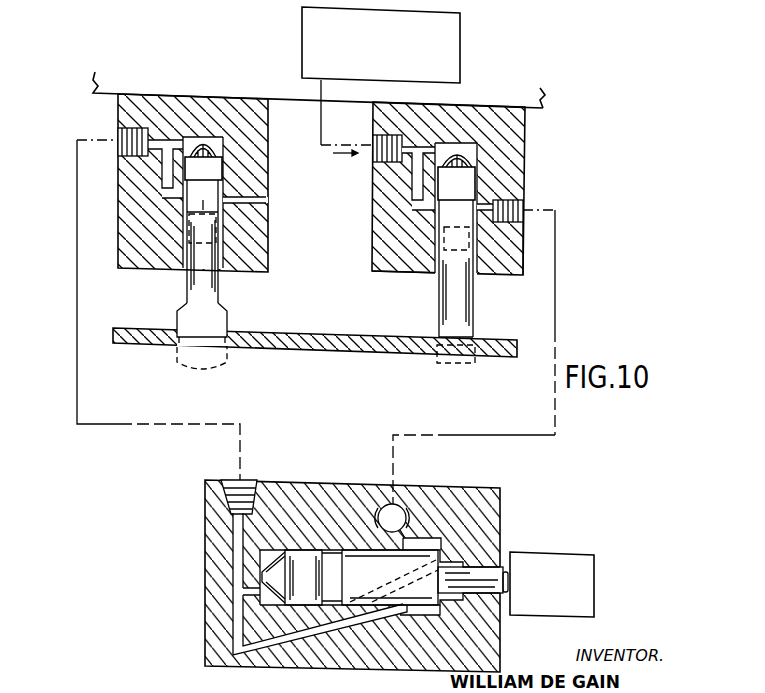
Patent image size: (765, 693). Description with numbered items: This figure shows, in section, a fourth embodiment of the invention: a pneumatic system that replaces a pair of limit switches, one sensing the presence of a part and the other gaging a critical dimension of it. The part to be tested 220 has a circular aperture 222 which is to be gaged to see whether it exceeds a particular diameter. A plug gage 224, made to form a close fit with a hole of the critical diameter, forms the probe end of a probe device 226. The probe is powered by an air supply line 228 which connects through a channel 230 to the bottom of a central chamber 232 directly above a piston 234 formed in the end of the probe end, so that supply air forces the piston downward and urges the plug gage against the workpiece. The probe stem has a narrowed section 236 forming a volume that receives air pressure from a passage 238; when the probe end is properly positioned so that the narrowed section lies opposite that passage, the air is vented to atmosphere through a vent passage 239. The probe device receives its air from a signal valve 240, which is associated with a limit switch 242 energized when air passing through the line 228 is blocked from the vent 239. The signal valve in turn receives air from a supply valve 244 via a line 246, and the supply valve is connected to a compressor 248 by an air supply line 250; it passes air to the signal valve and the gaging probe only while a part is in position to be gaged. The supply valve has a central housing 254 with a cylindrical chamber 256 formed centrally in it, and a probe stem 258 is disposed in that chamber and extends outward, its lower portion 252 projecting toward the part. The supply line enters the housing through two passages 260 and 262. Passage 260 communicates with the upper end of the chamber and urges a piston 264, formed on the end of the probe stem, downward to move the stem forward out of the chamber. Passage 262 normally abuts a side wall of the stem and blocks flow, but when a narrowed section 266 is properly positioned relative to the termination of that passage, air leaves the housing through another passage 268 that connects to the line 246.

The part to be tested 220 is at (367, 350).
The circular aperture 222 is at (229, 338).
The plug gage 224 is at (182, 322).
The probe device 226 is at (122, 276).
The air supply line 228 is at (77, 181).
The channel 230 is at (163, 133).
The central chamber 232 is at (224, 190).
The piston 234 is at (226, 157).
The narrowed section 236 is at (226, 209).
The passage 238 is at (162, 194).
The vent passage 239 is at (266, 201).
The signal valve 240 is at (200, 599).
The limit switch 242 is at (577, 605).
The supply valve 244 is at (530, 171).
The line 246 is at (558, 328).
The compressor 248 is at (443, 54).
The air supply line 250 is at (322, 90).
The block lower portion 252 is at (405, 262).
The central housing 254 is at (509, 270).
The cylindrical chamber 256 is at (436, 220).
The probe stem 258 is at (476, 322).
The passage 260 is at (413, 147).
The passage 262 is at (416, 192).
The piston 264 is at (474, 181).
The narrowed section 266 is at (472, 207).
The passage 268 is at (481, 220).